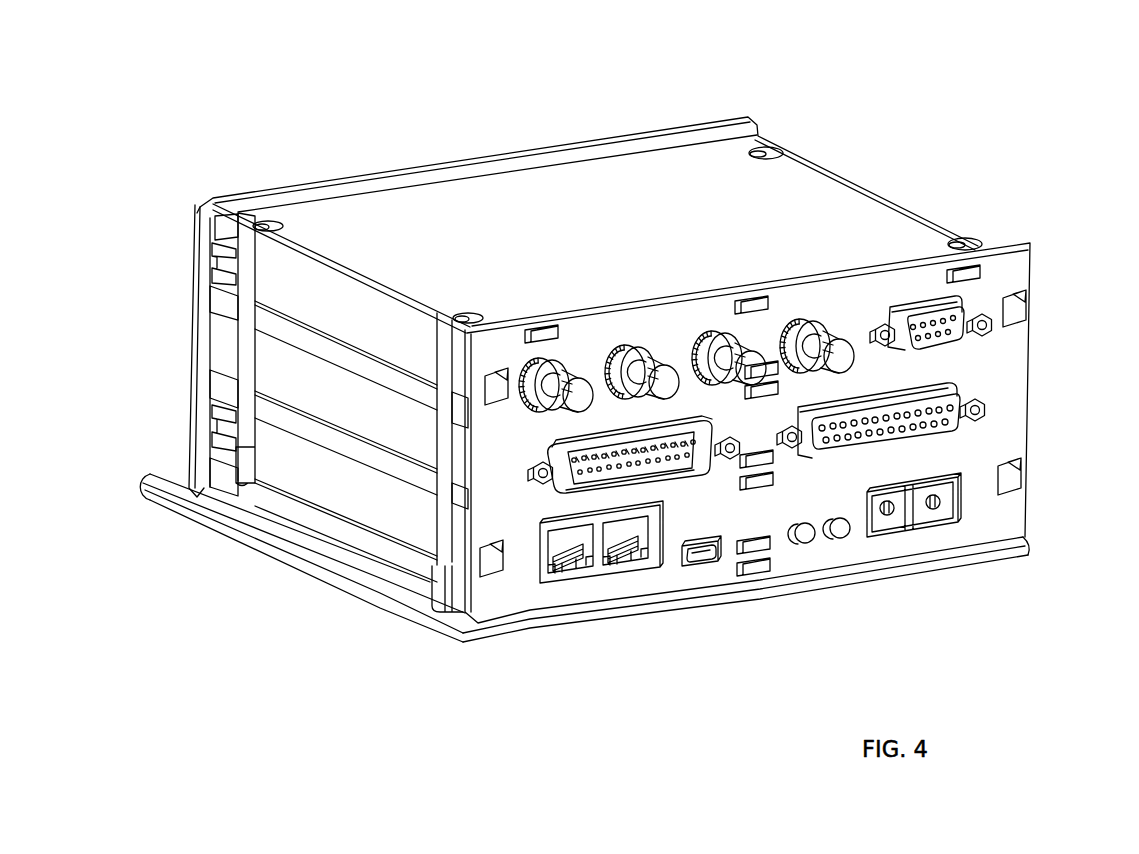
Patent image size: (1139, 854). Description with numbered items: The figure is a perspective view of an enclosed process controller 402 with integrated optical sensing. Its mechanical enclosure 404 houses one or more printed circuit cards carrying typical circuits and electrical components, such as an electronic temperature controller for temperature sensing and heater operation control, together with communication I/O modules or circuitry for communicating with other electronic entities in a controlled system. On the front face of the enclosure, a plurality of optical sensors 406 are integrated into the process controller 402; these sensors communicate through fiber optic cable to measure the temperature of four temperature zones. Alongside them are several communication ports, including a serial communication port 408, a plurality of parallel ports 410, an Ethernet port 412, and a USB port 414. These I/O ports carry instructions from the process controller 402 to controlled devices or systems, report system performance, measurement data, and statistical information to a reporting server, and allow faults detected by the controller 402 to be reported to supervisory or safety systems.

The process controller 402 is at (293, 108).
The mechanical enclosure 404 is at (850, 195).
The optical sensors 406 is at (566, 378).
The serial communication port 408 is at (960, 310).
The parallel ports 410 is at (560, 493).
The Ethernet port 412 is at (538, 587).
The USB port 414 is at (700, 560).